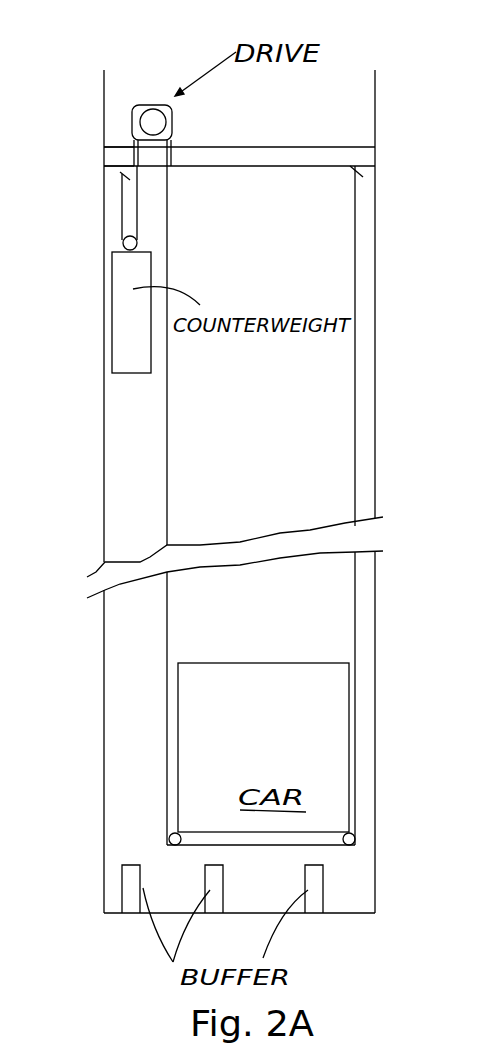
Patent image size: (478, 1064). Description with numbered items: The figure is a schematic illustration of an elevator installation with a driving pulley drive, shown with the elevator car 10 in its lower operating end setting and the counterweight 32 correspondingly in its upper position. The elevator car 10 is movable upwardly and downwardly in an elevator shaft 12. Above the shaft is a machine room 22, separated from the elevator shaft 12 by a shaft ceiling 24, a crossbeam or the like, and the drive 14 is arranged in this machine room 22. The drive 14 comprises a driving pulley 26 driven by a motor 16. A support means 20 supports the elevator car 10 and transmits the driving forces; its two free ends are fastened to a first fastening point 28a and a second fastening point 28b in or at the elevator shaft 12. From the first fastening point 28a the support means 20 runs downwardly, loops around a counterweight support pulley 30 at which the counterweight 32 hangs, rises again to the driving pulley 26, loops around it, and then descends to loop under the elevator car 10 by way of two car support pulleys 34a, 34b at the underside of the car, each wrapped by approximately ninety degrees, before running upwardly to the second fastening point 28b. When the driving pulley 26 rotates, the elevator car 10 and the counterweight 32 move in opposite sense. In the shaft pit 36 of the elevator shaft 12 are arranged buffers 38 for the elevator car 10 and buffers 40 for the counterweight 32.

The elevator car 10 is at (261, 754).
The elevator shaft 12 is at (378, 265).
The drive 14 is at (160, 100).
The motor 16 is at (139, 100).
The support means 20 is at (167, 598).
The machine room 22 is at (239, 144).
The shaft ceiling 24 is at (112, 157).
The driving pulley 26 is at (166, 109).
The first fastening point 28a is at (107, 190).
The second fastening point 28b is at (345, 182).
The counterweight support pulley 30 is at (137, 242).
The counterweight 32 is at (133, 325).
The car support pulley 34a is at (172, 846).
The car support pulley 34b is at (351, 846).
The shaft pit 36 is at (353, 900).
The buffers 38 is at (215, 900).
The buffers 40 is at (125, 900).